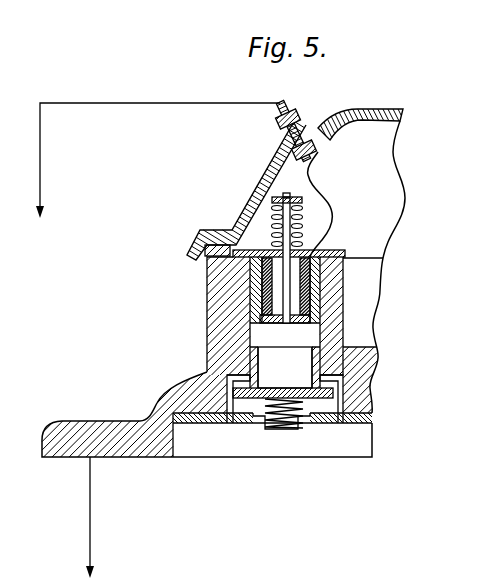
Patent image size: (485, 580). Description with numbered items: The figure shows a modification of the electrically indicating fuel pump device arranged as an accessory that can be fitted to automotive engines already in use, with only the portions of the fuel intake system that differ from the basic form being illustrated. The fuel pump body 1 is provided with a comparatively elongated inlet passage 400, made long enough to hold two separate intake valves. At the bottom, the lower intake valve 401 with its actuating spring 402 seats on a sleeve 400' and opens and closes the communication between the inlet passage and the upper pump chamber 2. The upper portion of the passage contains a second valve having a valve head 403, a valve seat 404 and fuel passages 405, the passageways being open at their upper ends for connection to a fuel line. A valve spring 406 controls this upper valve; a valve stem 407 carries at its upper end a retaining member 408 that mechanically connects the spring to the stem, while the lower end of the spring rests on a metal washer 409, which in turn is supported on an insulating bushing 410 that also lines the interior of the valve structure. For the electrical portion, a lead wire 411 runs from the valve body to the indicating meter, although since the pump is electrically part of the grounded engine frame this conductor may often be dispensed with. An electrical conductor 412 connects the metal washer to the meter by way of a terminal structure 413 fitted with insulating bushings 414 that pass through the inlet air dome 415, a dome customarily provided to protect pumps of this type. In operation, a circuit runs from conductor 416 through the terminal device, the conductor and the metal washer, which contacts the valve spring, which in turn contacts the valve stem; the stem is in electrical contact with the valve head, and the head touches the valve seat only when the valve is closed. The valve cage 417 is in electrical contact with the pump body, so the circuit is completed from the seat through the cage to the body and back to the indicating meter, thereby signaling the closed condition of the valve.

The fuel pump body 1 is at (163, 397).
The upper pump chamber 2 is at (355, 445).
The inlet passage 400 is at (338, 347).
The sleeve 400' is at (347, 369).
The lower intake valve 401 is at (330, 409).
The actuating spring 402 is at (286, 423).
The valve head 403 is at (250, 334).
The valve seat 404 is at (250, 307).
The fuel passages 405 is at (207, 276).
The valve spring 406 is at (300, 222).
The valve stem 407 is at (262, 208).
The retaining member 408 is at (302, 199).
The metal washer 409 is at (262, 252).
The insulating bushing 410 is at (345, 282).
The lead wire 411 is at (90, 477).
The electrical conductor 412 is at (335, 226).
The terminal structure 413 is at (288, 104).
The insulating bushings 414 is at (280, 140).
The inlet air dome 415 is at (378, 110).
The conductor 416 is at (147, 104).
The valve cage 417 is at (345, 321).